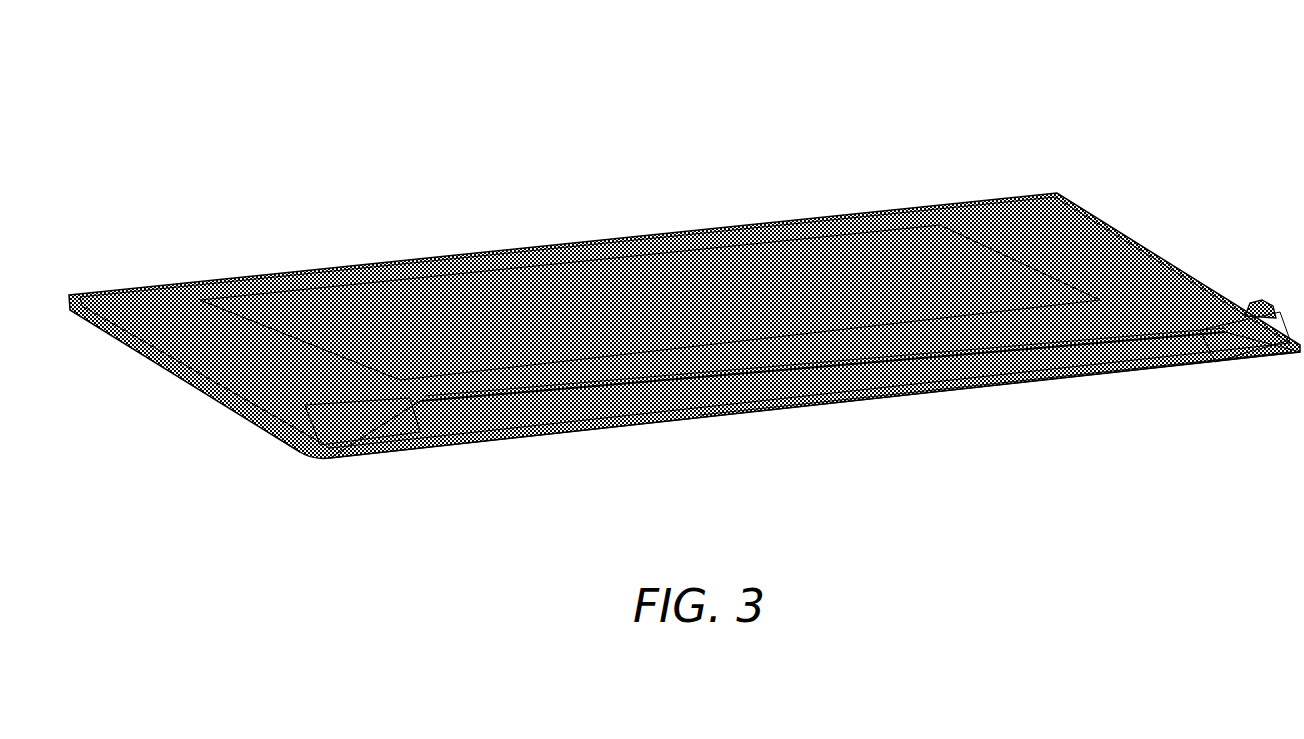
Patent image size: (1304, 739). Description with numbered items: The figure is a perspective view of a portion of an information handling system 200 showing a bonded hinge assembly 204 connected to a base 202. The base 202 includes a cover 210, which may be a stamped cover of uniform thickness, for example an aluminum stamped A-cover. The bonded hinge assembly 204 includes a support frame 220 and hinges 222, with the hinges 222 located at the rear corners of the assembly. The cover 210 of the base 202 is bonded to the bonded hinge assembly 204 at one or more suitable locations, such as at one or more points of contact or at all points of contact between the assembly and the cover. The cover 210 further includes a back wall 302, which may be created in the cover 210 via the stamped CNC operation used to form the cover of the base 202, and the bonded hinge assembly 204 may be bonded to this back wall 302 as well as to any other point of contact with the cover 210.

The information handling system 200 is at (824, 78).
The base 202 is at (580, 243).
The bonded hinge assembly 204 is at (743, 372).
The cover 210 is at (437, 298).
The support frame 220 is at (567, 392).
The hinges 222 is at (378, 418).
The back wall 302 is at (998, 368).